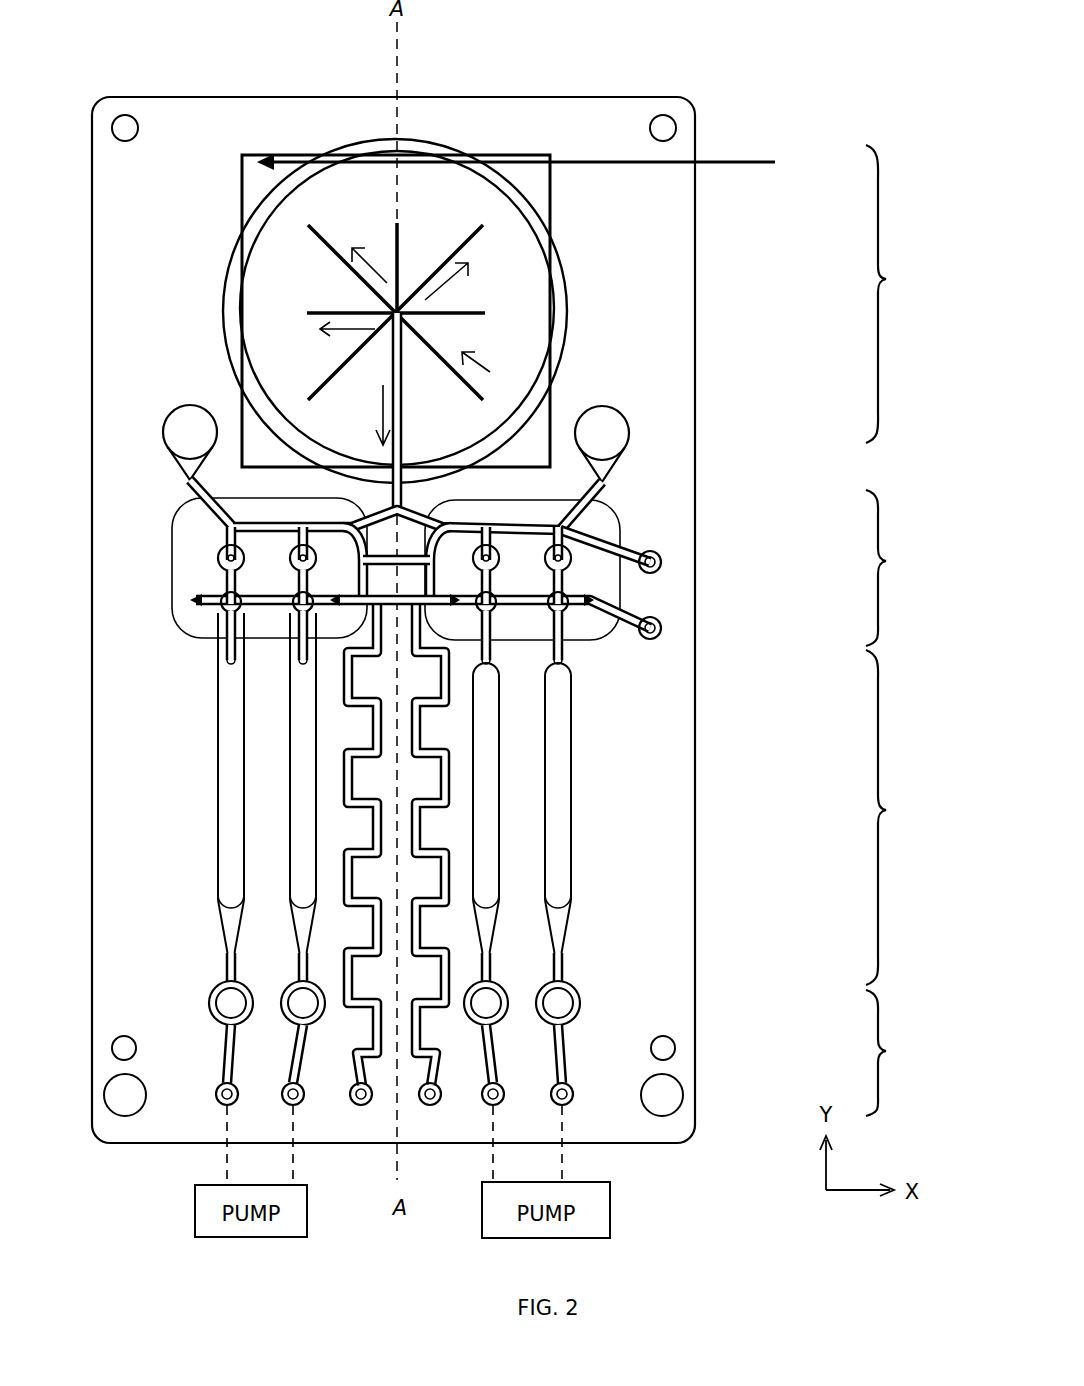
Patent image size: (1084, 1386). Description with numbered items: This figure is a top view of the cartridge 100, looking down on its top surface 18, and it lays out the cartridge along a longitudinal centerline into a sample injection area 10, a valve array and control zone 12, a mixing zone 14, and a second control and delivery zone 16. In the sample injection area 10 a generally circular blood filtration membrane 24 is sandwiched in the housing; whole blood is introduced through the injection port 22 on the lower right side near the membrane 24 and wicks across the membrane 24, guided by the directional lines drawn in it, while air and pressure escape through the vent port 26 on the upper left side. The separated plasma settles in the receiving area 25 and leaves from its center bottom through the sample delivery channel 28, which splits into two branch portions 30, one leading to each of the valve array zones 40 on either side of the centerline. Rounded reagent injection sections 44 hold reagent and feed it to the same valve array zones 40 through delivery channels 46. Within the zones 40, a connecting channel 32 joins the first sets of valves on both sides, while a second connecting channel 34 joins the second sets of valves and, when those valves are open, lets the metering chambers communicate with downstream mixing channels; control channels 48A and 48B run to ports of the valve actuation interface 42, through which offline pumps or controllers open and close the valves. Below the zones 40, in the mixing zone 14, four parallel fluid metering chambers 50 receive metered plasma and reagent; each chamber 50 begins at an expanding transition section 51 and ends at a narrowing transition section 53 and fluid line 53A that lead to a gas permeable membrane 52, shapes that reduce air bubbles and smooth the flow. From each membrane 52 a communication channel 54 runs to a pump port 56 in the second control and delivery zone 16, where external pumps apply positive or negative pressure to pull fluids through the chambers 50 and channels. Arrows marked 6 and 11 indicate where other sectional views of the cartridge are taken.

The cartridge 100 is at (838, 80).
The sample injection area 10 is at (894, 294).
The valve array and control zone 12 is at (895, 568).
The mixing zone 14 is at (635, 851).
The second control and delivery zone 16 is at (888, 1053).
The top surface 18 is at (612, 116).
The injection port 22 is at (558, 458).
The blood filtration membrane 24 is at (565, 237).
The receiving area 25 is at (253, 210).
The vent port 26 is at (534, 165).
The sample delivery channel 28 is at (405, 432).
The branch portions 30 is at (364, 505).
The connecting channel 32 is at (380, 556).
The connecting channel 34 is at (396, 576).
The valve array zones 40 is at (177, 520).
The valve actuation interface 42 is at (668, 569).
The reagent injection sections 44 is at (176, 432).
The delivery channels 46 is at (196, 497).
The control channel 48A is at (632, 560).
The control channel 48B is at (630, 625).
The fluid metering chambers 50 is at (219, 776).
The transition section 51 is at (222, 662).
The gas permeable membrane 52 is at (218, 992).
The transition section 53 is at (226, 920).
The fluid line 53A is at (226, 964).
The communication channels 54 is at (231, 1068).
The pump ports 56 is at (217, 1104).
The section line 6 is at (305, 500).
The section line 11 is at (558, 945).